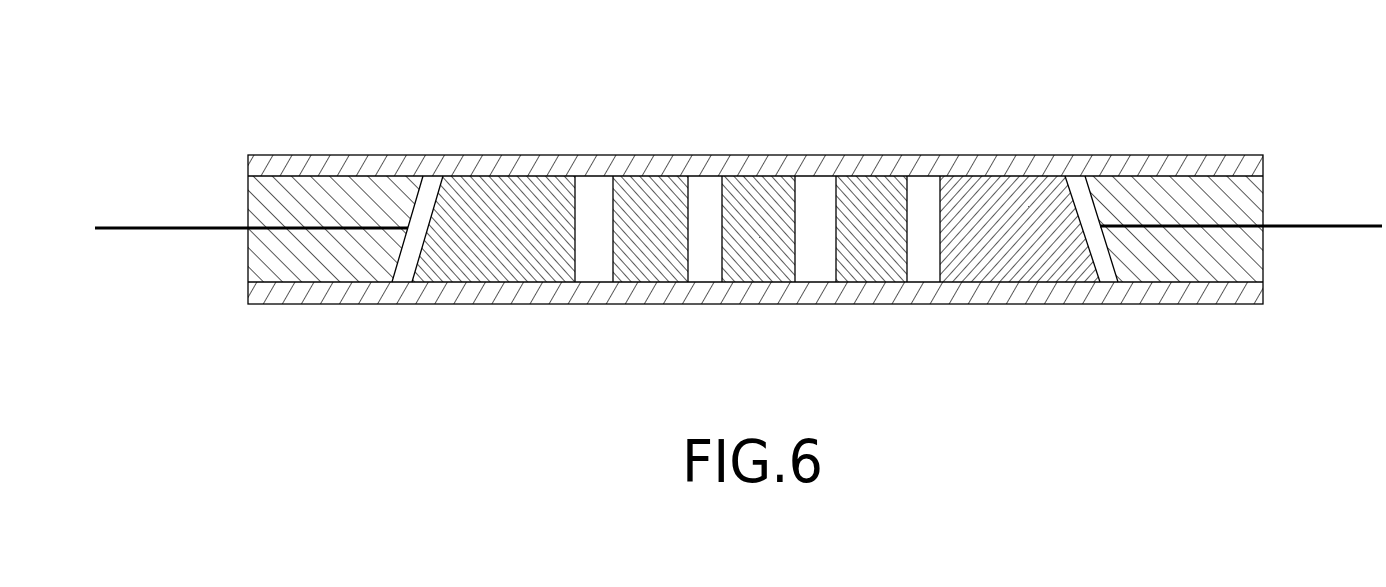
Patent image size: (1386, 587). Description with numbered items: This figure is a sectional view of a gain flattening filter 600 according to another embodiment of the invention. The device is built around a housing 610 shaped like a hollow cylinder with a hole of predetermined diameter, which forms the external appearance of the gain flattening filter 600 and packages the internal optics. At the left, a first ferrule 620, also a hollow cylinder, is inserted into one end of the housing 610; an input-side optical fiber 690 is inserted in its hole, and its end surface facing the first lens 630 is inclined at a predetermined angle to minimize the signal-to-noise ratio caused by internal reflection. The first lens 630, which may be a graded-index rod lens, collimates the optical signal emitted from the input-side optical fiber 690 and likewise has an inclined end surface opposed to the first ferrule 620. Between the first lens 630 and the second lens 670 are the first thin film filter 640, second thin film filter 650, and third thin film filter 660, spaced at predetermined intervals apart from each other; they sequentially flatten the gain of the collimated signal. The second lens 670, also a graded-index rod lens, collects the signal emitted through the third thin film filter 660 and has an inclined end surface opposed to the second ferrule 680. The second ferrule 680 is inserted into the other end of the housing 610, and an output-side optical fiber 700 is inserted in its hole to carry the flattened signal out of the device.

The gain flattening filter 600 is at (290, 138).
The housing 610 is at (588, 166).
The first ferrule 620 is at (352, 156).
The first lens 630 is at (510, 186).
The first thin film filter 640 is at (655, 186).
The second thin film filter 650 is at (762, 186).
The third thin film filter 660 is at (868, 186).
The second lens 670 is at (1010, 186).
The second ferrule 680 is at (1173, 186).
The input-side optical fiber 690 is at (170, 227).
The output-side optical fiber 700 is at (1333, 225).